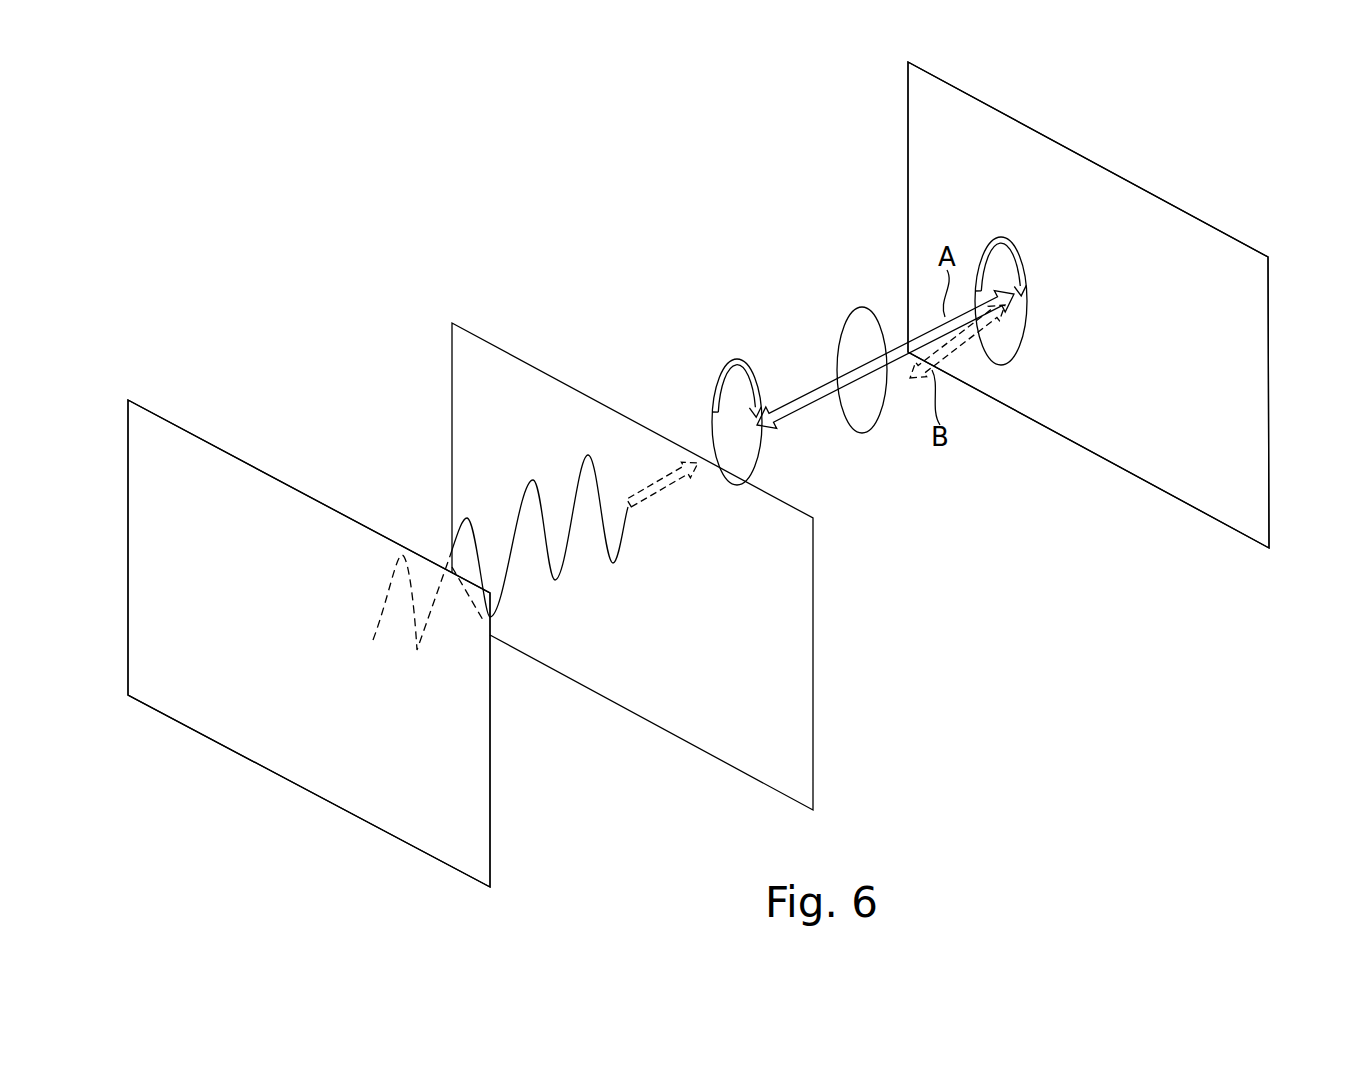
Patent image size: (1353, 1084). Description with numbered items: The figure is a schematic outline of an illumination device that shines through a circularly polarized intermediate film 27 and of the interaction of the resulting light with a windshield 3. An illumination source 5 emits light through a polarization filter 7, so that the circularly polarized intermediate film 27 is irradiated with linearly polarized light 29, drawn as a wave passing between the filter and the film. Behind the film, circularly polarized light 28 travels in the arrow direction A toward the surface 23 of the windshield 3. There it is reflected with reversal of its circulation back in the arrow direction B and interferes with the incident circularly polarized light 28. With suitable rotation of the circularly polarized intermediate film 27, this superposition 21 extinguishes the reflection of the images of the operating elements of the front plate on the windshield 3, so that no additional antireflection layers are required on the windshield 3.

The windshield 3 is at (1245, 353).
The illumination source 5 is at (500, 687).
The polarization filter 7 is at (470, 793).
The superposition 21 is at (1038, 297).
The surface of the windshield 23 is at (925, 147).
The circularly polarized intermediate film 27 is at (790, 703).
The circularly polarized light 28 is at (722, 366).
The linearly polarized light 29 is at (518, 502).